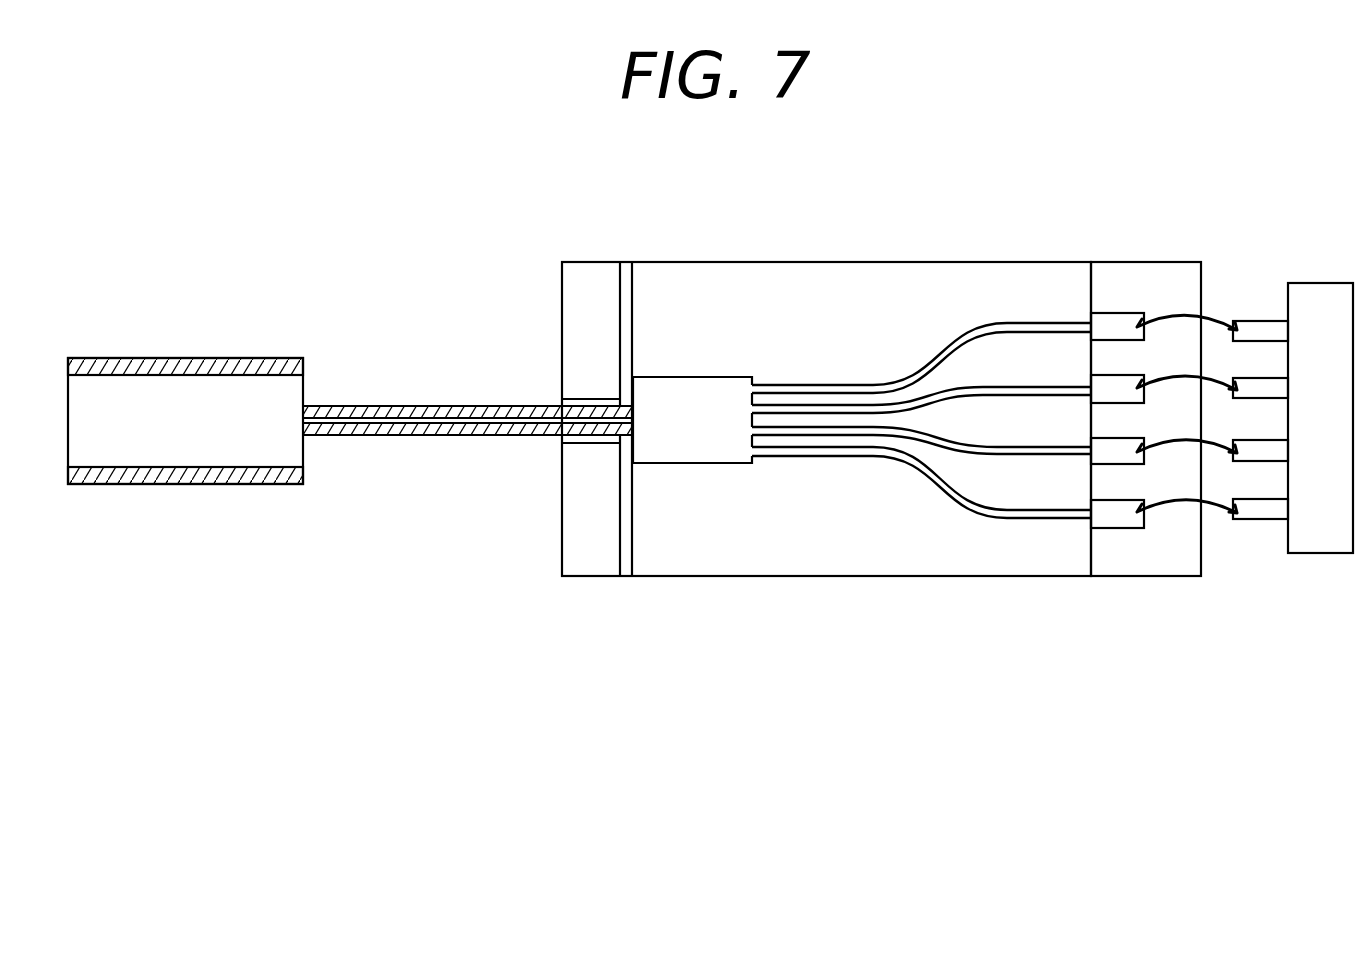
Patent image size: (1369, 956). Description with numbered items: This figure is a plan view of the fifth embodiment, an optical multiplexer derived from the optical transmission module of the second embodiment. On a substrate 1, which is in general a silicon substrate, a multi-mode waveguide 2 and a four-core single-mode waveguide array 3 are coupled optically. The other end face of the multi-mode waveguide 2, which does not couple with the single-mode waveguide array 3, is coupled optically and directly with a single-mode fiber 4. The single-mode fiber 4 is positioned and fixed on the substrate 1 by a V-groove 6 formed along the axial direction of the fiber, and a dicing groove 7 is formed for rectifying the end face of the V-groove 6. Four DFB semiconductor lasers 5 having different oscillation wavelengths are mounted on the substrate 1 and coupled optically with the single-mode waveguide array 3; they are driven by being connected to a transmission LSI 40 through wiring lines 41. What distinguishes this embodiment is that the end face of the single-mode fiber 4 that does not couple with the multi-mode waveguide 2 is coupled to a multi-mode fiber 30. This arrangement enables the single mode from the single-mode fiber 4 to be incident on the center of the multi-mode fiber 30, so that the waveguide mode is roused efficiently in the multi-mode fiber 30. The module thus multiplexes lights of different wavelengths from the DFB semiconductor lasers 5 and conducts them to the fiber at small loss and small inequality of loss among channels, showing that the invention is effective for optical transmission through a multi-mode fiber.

The substrate 1 is at (864, 576).
The multi-mode waveguide 2 is at (684, 377).
The single-mode waveguide array 3 is at (827, 475).
The single-mode fiber 4 is at (457, 437).
The DFB semiconductor lasers 5 is at (1107, 323).
The V-groove 6 is at (574, 398).
The dicing groove 7 is at (626, 576).
The multi-mode fiber 30 is at (168, 386).
The transmission LSI 40 is at (1320, 553).
The wiring lines 41 is at (1225, 312).